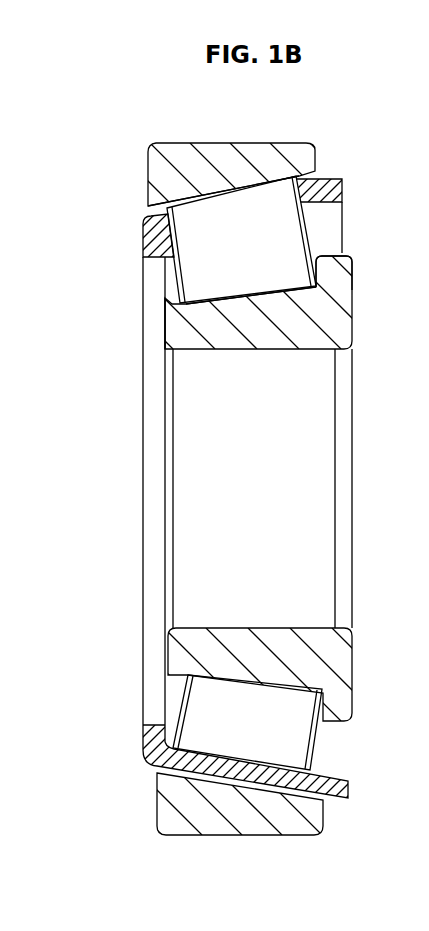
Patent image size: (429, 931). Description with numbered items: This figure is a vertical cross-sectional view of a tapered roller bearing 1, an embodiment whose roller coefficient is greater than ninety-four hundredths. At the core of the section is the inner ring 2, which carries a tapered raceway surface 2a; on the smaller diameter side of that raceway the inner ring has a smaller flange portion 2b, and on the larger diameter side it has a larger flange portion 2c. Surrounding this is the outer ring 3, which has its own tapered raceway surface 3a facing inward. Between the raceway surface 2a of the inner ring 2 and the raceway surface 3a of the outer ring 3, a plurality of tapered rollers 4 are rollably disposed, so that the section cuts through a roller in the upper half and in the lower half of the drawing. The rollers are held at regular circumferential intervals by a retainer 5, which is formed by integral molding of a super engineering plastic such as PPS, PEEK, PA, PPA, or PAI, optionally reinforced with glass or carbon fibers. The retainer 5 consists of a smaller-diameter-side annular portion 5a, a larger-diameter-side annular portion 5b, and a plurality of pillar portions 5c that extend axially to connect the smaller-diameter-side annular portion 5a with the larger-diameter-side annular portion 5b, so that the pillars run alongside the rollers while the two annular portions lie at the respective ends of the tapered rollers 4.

The tapered roller bearing 1 is at (369, 154).
The inner ring 2 is at (323, 307).
The raceway surface 2a is at (241, 292).
The smaller flange portion 2b is at (168, 296).
The larger flange portion 2c is at (333, 270).
The outer ring 3 is at (183, 147).
The raceway surface 3a is at (238, 188).
The tapered rollers 4 is at (297, 250).
The retainer 5 is at (142, 222).
The smaller-diameter-side annular portion 5a is at (148, 245).
The larger-diameter-side annular portion 5b is at (342, 183).
The pillar portions 5c is at (250, 782).